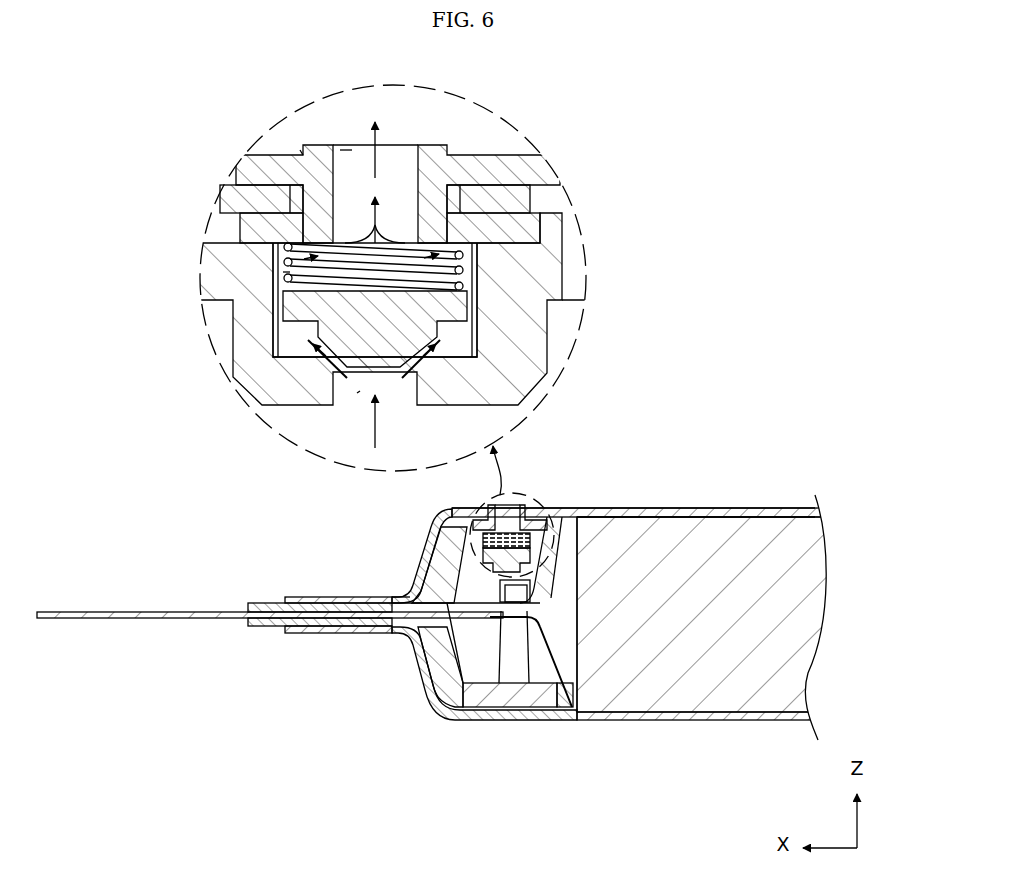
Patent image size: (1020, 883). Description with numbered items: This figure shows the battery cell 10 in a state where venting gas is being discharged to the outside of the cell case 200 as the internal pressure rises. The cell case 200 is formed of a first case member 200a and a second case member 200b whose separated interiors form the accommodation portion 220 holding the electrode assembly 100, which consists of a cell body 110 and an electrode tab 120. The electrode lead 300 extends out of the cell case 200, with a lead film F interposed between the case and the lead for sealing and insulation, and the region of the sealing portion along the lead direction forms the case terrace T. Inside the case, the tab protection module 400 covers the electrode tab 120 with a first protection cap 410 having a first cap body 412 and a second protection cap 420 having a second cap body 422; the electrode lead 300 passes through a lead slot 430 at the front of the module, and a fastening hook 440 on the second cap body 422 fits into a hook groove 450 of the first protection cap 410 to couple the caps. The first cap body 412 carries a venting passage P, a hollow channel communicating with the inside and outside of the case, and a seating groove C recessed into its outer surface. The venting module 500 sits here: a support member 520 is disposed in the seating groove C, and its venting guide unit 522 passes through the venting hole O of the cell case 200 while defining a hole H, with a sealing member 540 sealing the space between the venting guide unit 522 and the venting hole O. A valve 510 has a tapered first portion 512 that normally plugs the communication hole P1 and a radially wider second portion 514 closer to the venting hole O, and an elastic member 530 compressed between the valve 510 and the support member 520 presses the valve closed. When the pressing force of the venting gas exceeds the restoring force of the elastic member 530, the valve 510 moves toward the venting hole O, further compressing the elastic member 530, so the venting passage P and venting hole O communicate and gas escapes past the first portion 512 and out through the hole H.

The battery cell 10 is at (149, 460).
The electrode assembly 100 is at (808, 590).
The cell body 110 is at (673, 528).
The electrode tab 120 is at (567, 598).
The cell case 200 is at (786, 480).
The first case member 200a is at (740, 508).
The second case member 200b is at (705, 720).
The accommodation portion 220 is at (786, 523).
The electrode lead 300 is at (145, 612).
The tab protection module 400 is at (509, 712).
The first protection cap 410 is at (433, 529).
The first cap body 412 is at (450, 563).
The second protection cap 420 is at (440, 706).
The second cap body 422 is at (437, 652).
The lead slot 430 is at (403, 597).
The fastening hook 440 is at (515, 666).
The hook groove 450 is at (535, 566).
The venting module 500 is at (516, 177).
The valve 510 is at (299, 359).
The first portion 512 is at (390, 366).
The second portion 514 is at (300, 306).
The support member 520 is at (563, 231).
The venting guide unit 522 is at (263, 198).
The elastic member 530 is at (283, 261).
The sealing member 540 is at (530, 200).
The venting hole O is at (300, 151).
The hole H is at (352, 149).
The seating groove C is at (258, 229).
The venting passage P is at (283, 273).
The communication hole P1 is at (357, 394).
The lead film F is at (262, 603).
The case terrace T is at (300, 597).